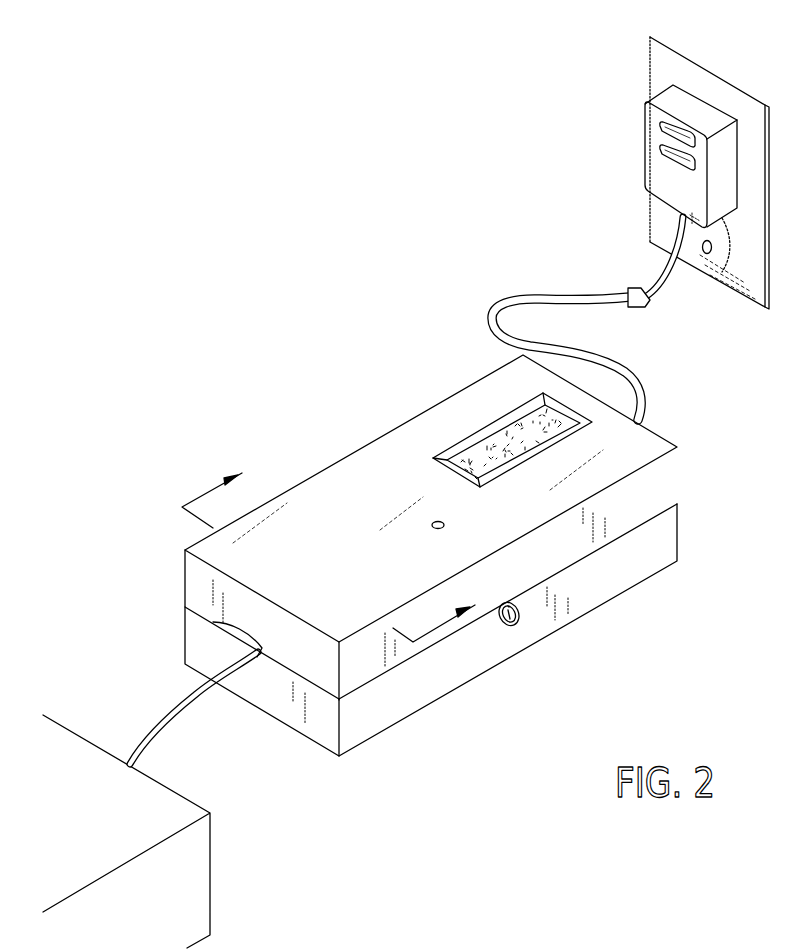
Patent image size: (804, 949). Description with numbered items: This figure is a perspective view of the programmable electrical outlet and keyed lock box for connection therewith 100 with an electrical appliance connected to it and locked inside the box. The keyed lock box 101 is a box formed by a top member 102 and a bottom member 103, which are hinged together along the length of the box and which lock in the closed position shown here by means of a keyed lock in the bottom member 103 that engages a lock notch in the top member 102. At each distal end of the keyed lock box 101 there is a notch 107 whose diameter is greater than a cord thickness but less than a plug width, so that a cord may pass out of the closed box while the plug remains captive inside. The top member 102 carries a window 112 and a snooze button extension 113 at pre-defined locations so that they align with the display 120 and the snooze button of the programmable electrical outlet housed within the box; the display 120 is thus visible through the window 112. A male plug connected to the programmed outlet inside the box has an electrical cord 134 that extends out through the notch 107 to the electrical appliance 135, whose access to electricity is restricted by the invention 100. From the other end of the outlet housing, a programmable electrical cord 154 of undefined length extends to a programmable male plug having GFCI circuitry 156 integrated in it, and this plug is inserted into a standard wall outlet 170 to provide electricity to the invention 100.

The programmable electrical outlet and keyed lock box for connection therewith 100 is at (385, 82).
The keyed lock box 101 is at (385, 490).
The top member 102 is at (385, 490).
The bottom member 103 is at (390, 722).
The notch 107 is at (213, 622).
The window 112 is at (466, 439).
The snooze button extension 113 is at (437, 521).
The display 120 is at (513, 429).
The electrical cord 134 is at (167, 740).
The electrical appliance 135 is at (197, 870).
The programmable electrical cord 154 is at (536, 294).
The GFCI circuitry 156 is at (630, 97).
The standard wall outlet 170 is at (716, 254).